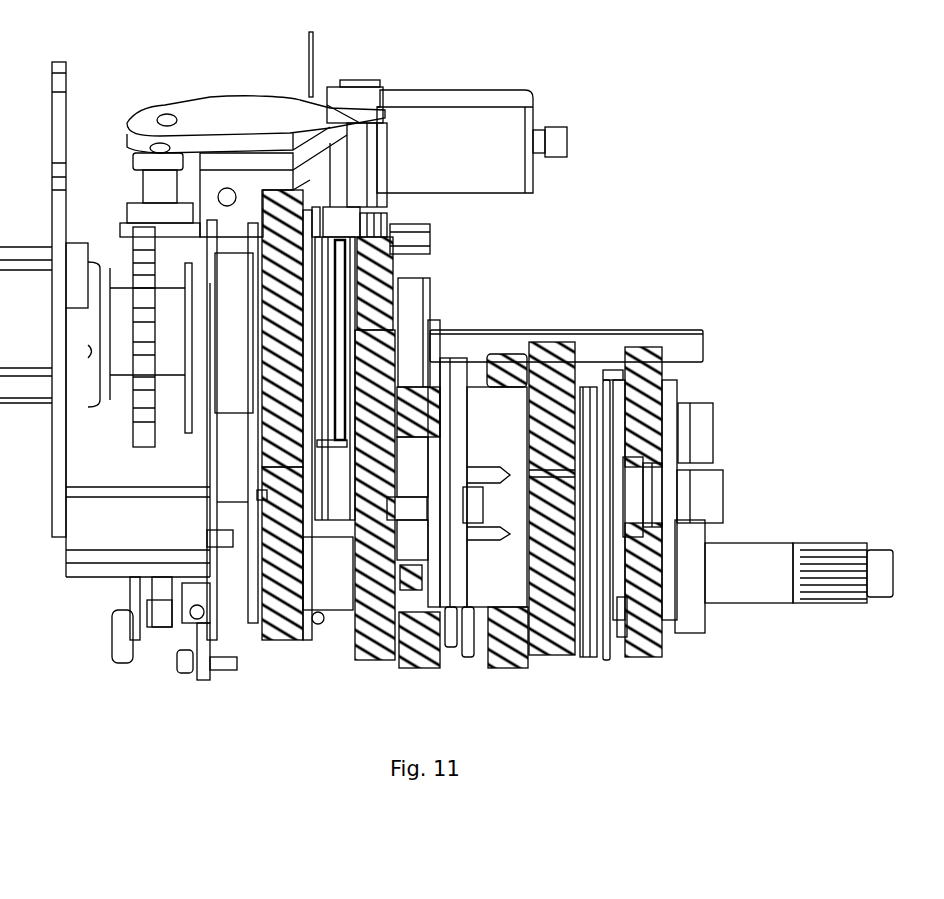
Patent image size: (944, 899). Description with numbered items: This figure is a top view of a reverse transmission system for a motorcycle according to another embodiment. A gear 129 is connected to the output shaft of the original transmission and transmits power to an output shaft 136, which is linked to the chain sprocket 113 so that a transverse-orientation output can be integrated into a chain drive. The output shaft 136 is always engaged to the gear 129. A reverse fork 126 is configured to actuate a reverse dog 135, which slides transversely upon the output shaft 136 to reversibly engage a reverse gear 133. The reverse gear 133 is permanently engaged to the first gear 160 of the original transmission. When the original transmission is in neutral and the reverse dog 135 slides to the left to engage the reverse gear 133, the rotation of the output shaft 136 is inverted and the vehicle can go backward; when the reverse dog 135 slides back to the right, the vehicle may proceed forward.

The chain sprocket 113 is at (147, 362).
The reverse fork 126 is at (332, 437).
The gear 129 is at (375, 483).
The reverse gear 133 is at (277, 284).
The reverse dog 135 is at (335, 292).
The output shaft 136 is at (385, 270).
The first gear 160 is at (278, 520).